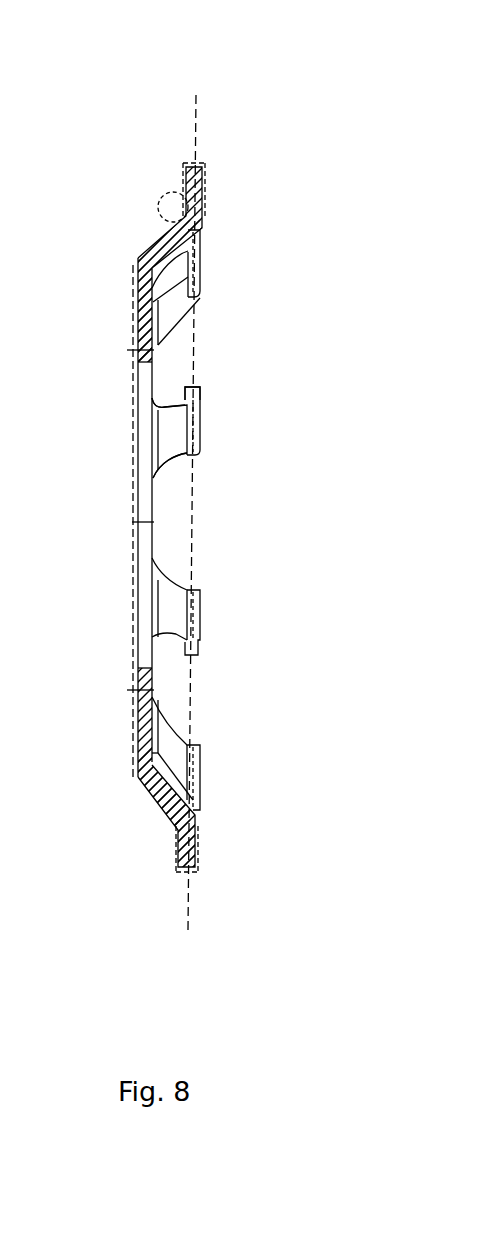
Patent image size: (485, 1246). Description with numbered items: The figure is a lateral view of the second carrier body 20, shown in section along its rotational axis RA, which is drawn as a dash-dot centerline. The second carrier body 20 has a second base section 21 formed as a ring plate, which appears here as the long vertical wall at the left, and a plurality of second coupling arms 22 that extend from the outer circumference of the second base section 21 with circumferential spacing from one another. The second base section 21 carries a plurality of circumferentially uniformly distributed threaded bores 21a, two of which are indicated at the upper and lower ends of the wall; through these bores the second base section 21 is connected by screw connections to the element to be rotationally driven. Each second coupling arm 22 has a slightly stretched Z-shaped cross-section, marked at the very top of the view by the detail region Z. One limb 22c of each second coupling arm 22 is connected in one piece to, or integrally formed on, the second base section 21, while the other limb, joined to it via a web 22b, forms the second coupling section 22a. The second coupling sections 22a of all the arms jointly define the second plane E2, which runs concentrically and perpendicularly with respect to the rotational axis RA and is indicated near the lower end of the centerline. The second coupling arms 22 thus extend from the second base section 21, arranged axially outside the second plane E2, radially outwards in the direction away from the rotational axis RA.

The second carrier body 20 is at (360, 100).
The second base section 21 is at (137, 380).
The threaded bores 21a is at (135, 353).
The second coupling arms 22 is at (222, 208).
The second coupling section 22a is at (200, 392).
The web 22b is at (173, 448).
The limb 22c is at (157, 405).
The Z-shaped cross-section Z is at (157, 193).
The rotational axis RA is at (128, 523).
The second plane E2 is at (190, 917).